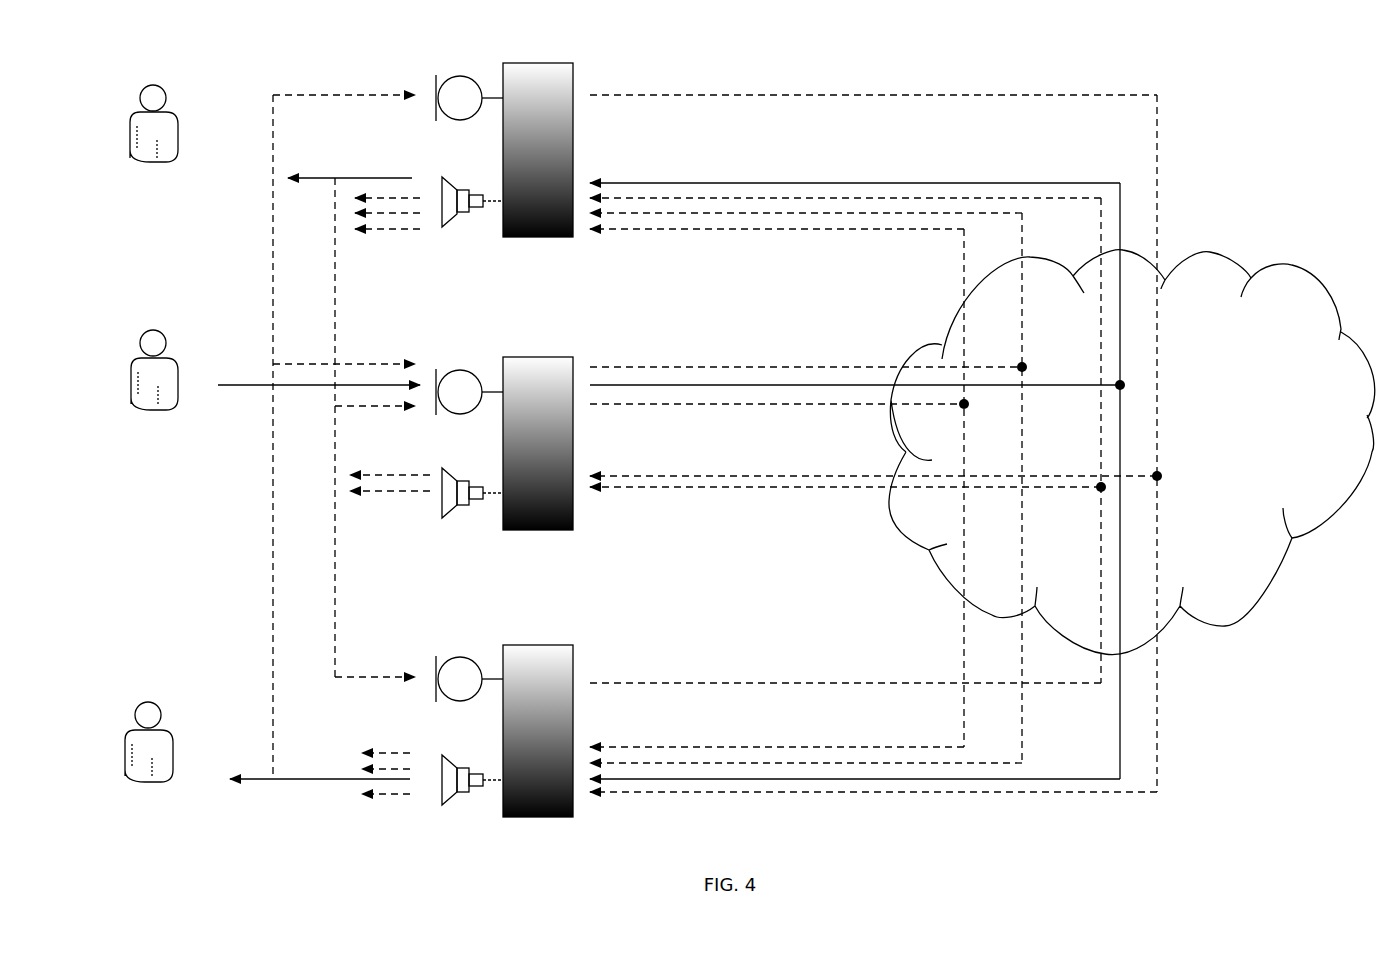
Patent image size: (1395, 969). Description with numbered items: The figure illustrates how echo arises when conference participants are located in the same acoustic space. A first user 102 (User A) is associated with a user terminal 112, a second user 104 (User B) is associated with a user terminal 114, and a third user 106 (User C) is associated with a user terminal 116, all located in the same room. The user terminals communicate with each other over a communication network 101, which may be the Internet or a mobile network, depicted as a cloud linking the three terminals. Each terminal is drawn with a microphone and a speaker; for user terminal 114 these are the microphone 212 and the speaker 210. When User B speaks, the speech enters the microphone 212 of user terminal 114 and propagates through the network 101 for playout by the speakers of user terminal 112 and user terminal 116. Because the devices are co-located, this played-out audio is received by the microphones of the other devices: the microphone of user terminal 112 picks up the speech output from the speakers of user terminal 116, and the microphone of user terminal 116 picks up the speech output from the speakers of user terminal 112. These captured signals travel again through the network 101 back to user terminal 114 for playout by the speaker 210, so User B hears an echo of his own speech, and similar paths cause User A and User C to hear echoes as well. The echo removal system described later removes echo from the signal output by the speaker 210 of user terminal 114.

The communication network 101 is at (1287, 262).
The first user 102 is at (133, 130).
The second user 104 is at (133, 374).
The third user 106 is at (126, 744).
The user terminal 112 is at (535, 63).
The user terminal 114 is at (540, 357).
The user terminal 116 is at (540, 645).
The speaker 210 is at (466, 519).
The microphone 212 is at (468, 371).